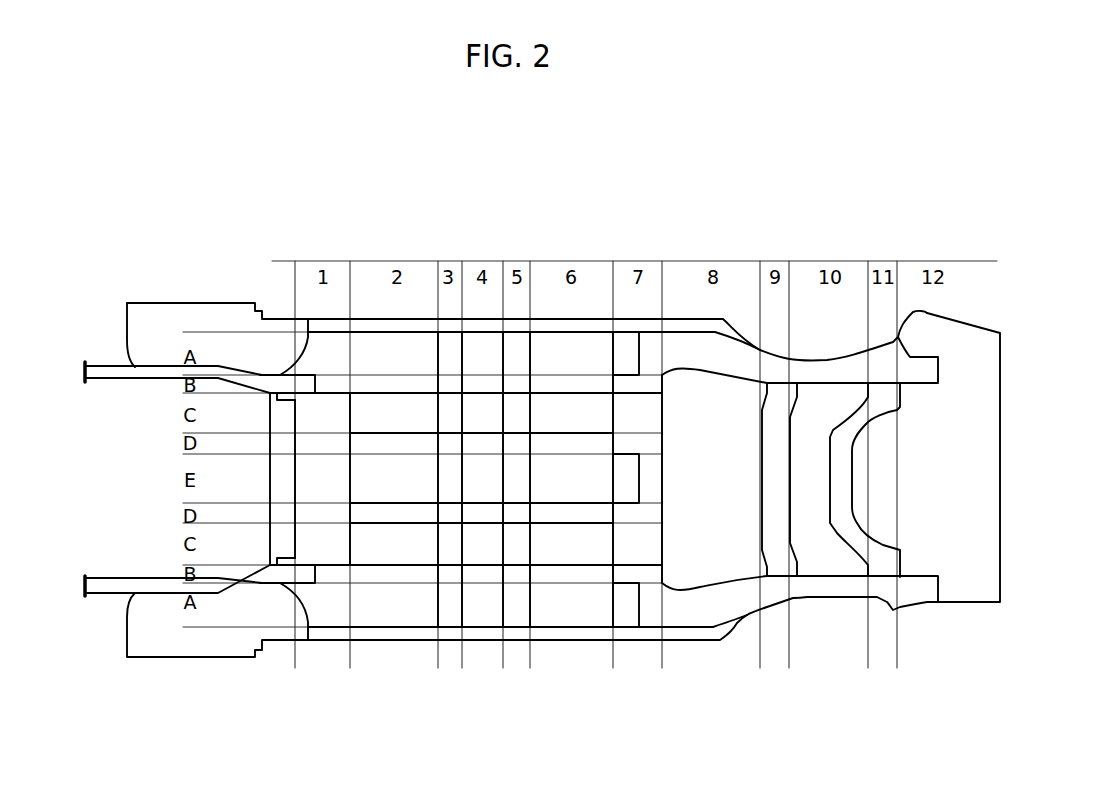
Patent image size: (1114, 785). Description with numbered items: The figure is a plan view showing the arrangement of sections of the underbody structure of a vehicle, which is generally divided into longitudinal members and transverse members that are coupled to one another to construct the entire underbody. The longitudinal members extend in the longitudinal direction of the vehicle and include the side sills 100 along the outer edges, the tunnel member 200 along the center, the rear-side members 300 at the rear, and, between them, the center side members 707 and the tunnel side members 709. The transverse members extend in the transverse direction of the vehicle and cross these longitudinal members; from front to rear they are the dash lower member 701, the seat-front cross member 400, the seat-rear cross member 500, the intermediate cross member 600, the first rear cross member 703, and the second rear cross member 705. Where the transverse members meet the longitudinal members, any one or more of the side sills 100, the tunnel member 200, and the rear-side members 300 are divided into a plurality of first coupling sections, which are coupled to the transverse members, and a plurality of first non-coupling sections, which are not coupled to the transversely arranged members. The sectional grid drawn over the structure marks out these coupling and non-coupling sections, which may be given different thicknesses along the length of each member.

The side sill 100 is at (375, 325).
The tunnel member 200 is at (317, 477).
The rear-side member 300 is at (833, 588).
The seat-front cross member 400 is at (447, 350).
The seat-rear cross member 500 is at (518, 350).
The intermediate cross member 600 is at (623, 350).
The dash lower member 701 is at (313, 418).
The first rear cross member 703 is at (770, 498).
The second rear cross member 705 is at (843, 477).
The center side member 707 is at (413, 575).
The tunnel side member 709 is at (392, 515).